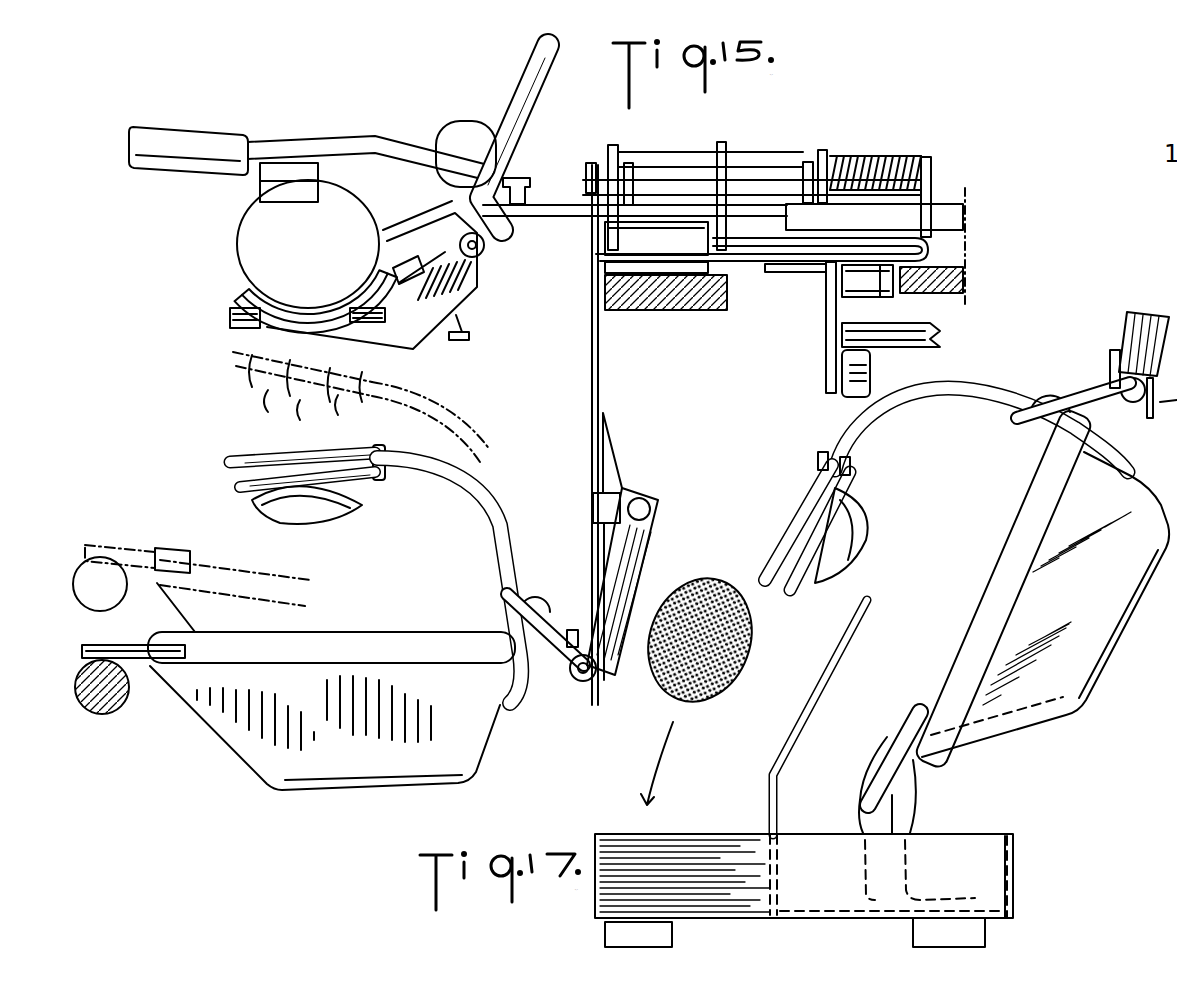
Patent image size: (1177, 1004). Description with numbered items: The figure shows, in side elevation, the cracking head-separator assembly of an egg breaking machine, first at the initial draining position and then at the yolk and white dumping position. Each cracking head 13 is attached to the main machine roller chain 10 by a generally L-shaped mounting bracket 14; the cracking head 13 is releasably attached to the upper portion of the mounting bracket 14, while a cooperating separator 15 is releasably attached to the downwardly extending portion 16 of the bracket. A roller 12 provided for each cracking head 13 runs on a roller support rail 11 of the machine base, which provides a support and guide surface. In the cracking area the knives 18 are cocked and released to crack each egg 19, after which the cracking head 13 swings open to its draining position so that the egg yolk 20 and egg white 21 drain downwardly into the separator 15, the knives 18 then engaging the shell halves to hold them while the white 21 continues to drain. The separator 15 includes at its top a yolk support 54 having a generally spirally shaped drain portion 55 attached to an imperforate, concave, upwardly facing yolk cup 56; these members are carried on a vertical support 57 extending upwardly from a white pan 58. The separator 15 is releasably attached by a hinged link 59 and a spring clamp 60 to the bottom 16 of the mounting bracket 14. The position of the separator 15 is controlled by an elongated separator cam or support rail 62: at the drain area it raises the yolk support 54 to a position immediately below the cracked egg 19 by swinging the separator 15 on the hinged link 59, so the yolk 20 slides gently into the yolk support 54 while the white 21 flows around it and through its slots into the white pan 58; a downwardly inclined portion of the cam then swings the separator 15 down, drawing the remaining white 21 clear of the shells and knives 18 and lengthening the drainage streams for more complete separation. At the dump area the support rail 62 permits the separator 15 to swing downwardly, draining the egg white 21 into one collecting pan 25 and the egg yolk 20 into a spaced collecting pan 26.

In FIG. 15, the main machine roller chain 10 is at (885, 297).
In FIG. 15, the roller support rail 11 is at (676, 304).
In FIG. 15, the roller 12 is at (605, 232).
In FIG. 15, the cracking head 13 is at (452, 106).
In FIG. 15, the mounting bracket 14 is at (600, 392).
In FIG. 15, the separator 15 is at (372, 640).
In FIG. 15, the downwardly extending portion of mounting bracket 16 is at (593, 550).
In FIG. 15, the knives 18 is at (245, 306).
In FIG. 15, the egg 19 is at (245, 238).
In FIG. 17, the egg yolk 20 is at (720, 647).
In FIG. 17, the egg white 21 is at (905, 790).
In FIG. 17, the collecting pan 25 is at (960, 912).
In FIG. 17, the spaced collecting pan 26 is at (652, 920).
In FIG. 15, the yolk support 54 is at (405, 426).
In FIG. 15, the spirally shaped drain portion 55 is at (378, 474).
In FIG. 17, the spirally shaped drain portion 55 is at (827, 493).
In FIG. 15, the yolk cup 56 is at (318, 518).
In FIG. 17, the yolk cup 56 is at (855, 535).
In FIG. 17, the vertical support 57 is at (988, 398).
In FIG. 15, the white pan 58 is at (357, 770).
In FIG. 17, the white pan 58 is at (1082, 591).
In FIG. 15, the hinged link 59 is at (558, 630).
In FIG. 17, the hinged link 59 is at (1083, 393).
In FIG. 15, the spring clamp 60 is at (627, 543).
In FIG. 17, the spring clamp 60 is at (1133, 333).
In FIG. 15, the separator support rail 62 is at (105, 608).